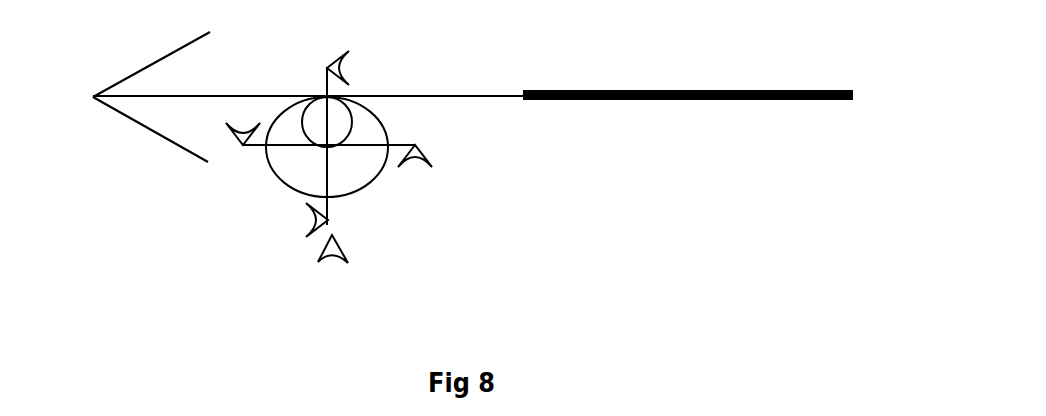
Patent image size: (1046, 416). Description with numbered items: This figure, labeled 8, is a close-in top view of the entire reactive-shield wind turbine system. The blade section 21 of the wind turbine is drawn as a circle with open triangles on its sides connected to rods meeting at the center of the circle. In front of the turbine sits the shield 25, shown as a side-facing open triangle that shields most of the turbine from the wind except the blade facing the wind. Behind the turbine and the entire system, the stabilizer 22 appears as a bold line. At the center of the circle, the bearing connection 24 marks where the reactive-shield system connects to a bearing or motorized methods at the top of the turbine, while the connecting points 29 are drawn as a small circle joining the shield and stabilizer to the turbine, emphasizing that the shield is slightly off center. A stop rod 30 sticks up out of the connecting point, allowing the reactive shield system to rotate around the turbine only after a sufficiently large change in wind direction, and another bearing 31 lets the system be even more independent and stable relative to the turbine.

The figure indicator 8 is at (335, 258).
The blade section 21 is at (380, 178).
The stabilizer 22 is at (708, 102).
The bearing connection 24 is at (287, 181).
The shield 25 is at (150, 65).
The connecting points 29 is at (347, 100).
The stop rod 30 is at (350, 93).
The bearing 31 is at (325, 95).